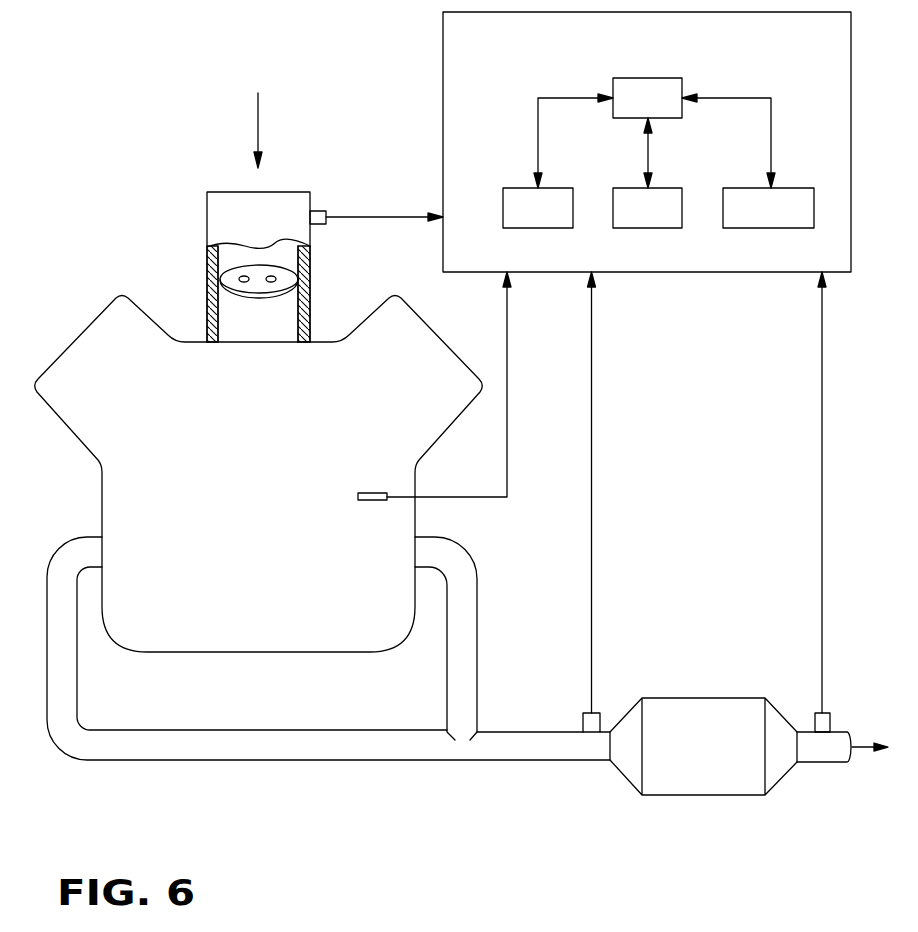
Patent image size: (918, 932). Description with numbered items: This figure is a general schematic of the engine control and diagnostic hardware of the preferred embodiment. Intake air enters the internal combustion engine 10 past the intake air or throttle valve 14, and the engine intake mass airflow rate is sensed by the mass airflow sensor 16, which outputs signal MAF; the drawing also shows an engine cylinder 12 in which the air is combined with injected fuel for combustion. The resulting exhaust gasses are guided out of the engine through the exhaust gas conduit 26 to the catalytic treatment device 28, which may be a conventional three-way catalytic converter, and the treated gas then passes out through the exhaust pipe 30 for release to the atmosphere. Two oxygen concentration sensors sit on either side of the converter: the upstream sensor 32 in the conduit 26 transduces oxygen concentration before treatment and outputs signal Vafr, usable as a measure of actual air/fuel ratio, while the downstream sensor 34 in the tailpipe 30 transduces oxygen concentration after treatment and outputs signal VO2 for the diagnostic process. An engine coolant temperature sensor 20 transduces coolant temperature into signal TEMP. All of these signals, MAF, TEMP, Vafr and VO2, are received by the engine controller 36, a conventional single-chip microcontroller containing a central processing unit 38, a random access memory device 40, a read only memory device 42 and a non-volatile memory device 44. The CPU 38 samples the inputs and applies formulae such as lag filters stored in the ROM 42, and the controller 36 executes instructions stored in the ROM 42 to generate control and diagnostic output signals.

The internal combustion engine 10 is at (193, 387).
The cylinder 12 is at (277, 205).
The intake air or throttle valve 14 is at (255, 272).
The mass airflow sensor 16 is at (318, 213).
The engine coolant temperature sensor 20 is at (369, 492).
The exhaust gas conduit 26 is at (313, 750).
The catalytic treatment device 28 is at (687, 767).
The exhaust pipe 30 is at (820, 752).
The upstream oxygen concentration sensor 32 is at (583, 718).
The downstream oxygen concentration sensor 34 is at (825, 718).
The engine controller 36 is at (453, 38).
The central processing unit 38 is at (618, 80).
The random access memory device 40 is at (528, 228).
The read only memory device 42 is at (650, 228).
The non-volatile memory device 44 is at (758, 222).